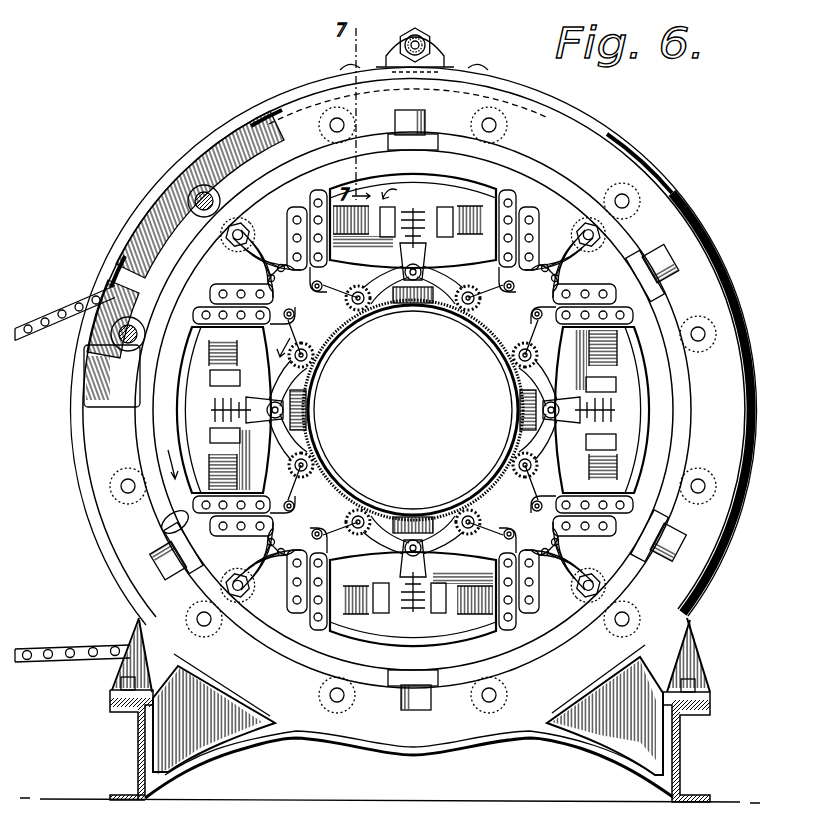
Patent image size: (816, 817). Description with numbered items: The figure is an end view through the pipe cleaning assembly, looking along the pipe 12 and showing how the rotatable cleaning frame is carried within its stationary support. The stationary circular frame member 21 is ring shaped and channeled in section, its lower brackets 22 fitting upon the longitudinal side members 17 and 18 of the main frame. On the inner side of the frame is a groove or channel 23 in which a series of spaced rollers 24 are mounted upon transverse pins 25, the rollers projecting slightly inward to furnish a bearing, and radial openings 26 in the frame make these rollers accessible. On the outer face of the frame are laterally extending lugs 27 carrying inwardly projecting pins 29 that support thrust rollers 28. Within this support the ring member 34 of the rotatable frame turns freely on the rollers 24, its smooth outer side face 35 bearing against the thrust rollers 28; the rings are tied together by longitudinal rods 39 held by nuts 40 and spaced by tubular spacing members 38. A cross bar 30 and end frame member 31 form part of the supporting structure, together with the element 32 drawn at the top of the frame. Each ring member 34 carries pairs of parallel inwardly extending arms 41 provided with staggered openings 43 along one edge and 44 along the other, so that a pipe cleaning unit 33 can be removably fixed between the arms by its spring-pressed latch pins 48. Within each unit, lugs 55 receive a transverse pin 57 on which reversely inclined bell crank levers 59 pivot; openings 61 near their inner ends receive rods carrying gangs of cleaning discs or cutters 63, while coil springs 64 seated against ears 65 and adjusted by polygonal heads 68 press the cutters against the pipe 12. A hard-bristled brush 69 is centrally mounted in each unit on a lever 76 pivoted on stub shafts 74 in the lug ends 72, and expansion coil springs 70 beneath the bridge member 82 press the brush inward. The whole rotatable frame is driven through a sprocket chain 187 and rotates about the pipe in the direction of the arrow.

The pipe 12 is at (318, 382).
The longitudinal side member 17 is at (694, 710).
The longitudinal side member 18 is at (138, 752).
The circular frame member 21 is at (150, 228).
The lower bracket 22 is at (248, 745).
The groove or channel 23 is at (170, 230).
The roller 24 is at (204, 185).
The pin 25 is at (206, 196).
The radial opening 26 is at (265, 118).
The laterally extending lug 27 is at (408, 128).
The roller 28 is at (428, 128).
The pin 29 is at (160, 522).
The cross bar 30 is at (412, 40).
The end frame member 31 is at (424, 36).
The terminal boss 32 is at (440, 46).
The pipe cleaning unit 33 is at (293, 334).
The ring member 34 is at (118, 360).
The outer side wall or face 35 is at (272, 650).
The tubular spacing member 38 is at (236, 248).
The longitudinal rod 39 is at (253, 580).
The nut 40 is at (245, 588).
The inwardly extending arm 41 is at (548, 240).
The opening 43 is at (318, 203).
The opening 44 is at (294, 228).
The latch pin or bolt 48 is at (312, 288).
The inwardly extending lug or ear 55 is at (300, 458).
The transversely extending pin 57 is at (290, 412).
The bell crank lever 59 is at (414, 300).
The opening 61 is at (305, 470).
The pipe cleaning disc or cutter 63 is at (380, 318).
The coil spring 64 is at (222, 382).
The ear 65 is at (604, 430).
The polygonal head 68 is at (220, 452).
The brush 69 is at (425, 522).
The expansion coil spring 70 is at (600, 393).
The end 72 is at (540, 300).
The stub shaft 74 is at (556, 286).
The lever 76 is at (540, 312).
The bridge member 82 is at (235, 408).
The sprocket chain 187 is at (75, 305).